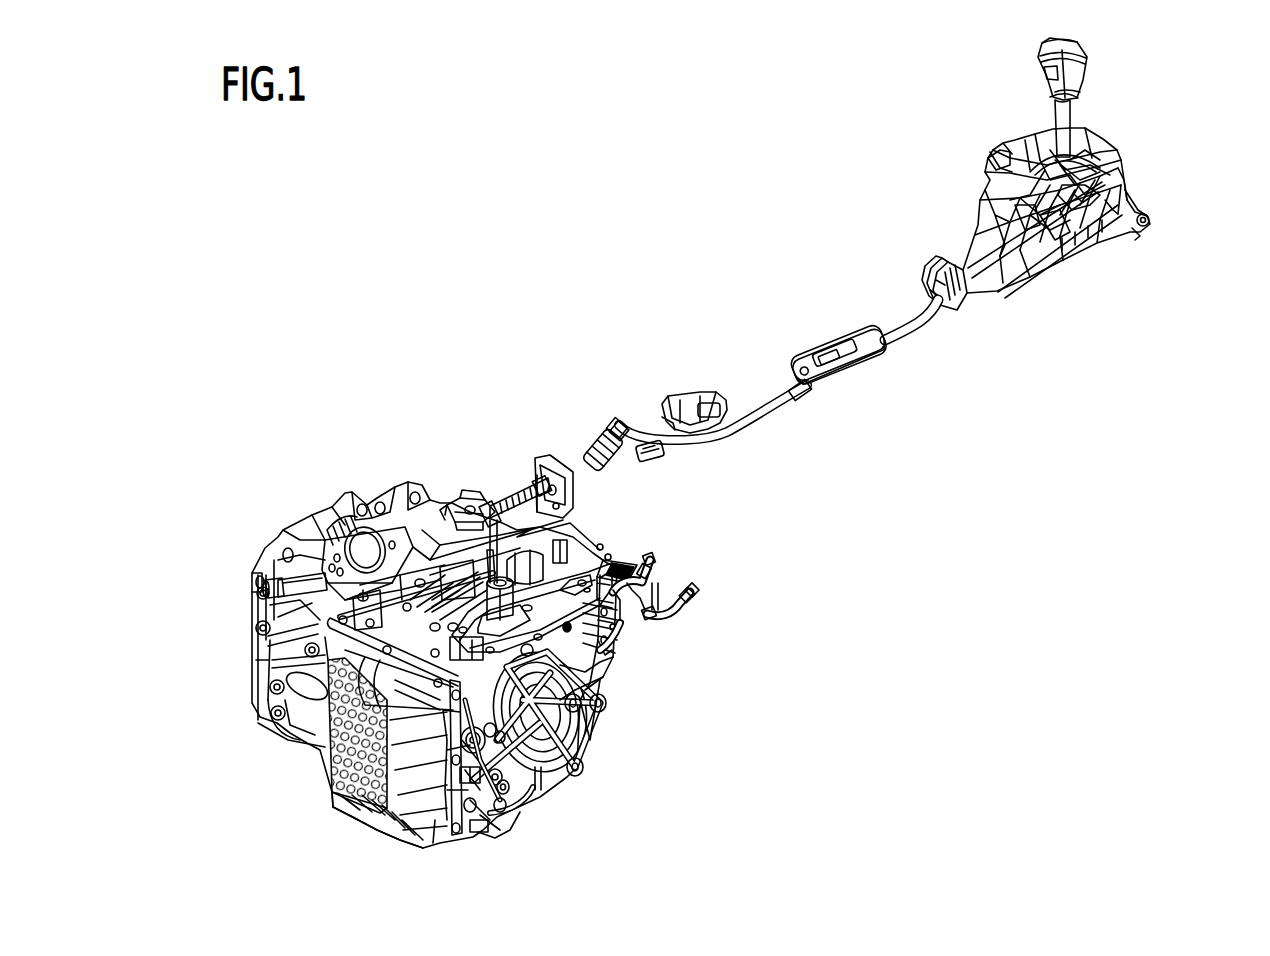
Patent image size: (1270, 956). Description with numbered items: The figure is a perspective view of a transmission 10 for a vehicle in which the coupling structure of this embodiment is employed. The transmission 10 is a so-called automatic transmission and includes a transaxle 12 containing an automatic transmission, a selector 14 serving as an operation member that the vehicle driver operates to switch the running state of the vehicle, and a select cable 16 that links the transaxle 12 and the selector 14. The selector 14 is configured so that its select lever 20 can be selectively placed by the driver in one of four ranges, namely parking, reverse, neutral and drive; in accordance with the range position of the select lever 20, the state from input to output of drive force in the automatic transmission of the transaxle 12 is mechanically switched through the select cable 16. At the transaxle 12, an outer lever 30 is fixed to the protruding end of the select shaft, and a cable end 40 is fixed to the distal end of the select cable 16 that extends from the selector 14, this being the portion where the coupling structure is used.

The transmission 10 is at (561, 229).
The transaxle 12 is at (614, 749).
The selector 14 is at (1112, 129).
The select cable 16 is at (808, 385).
The select lever 20 is at (1089, 70).
The outer lever 30 is at (470, 498).
The cable end 40 is at (488, 498).